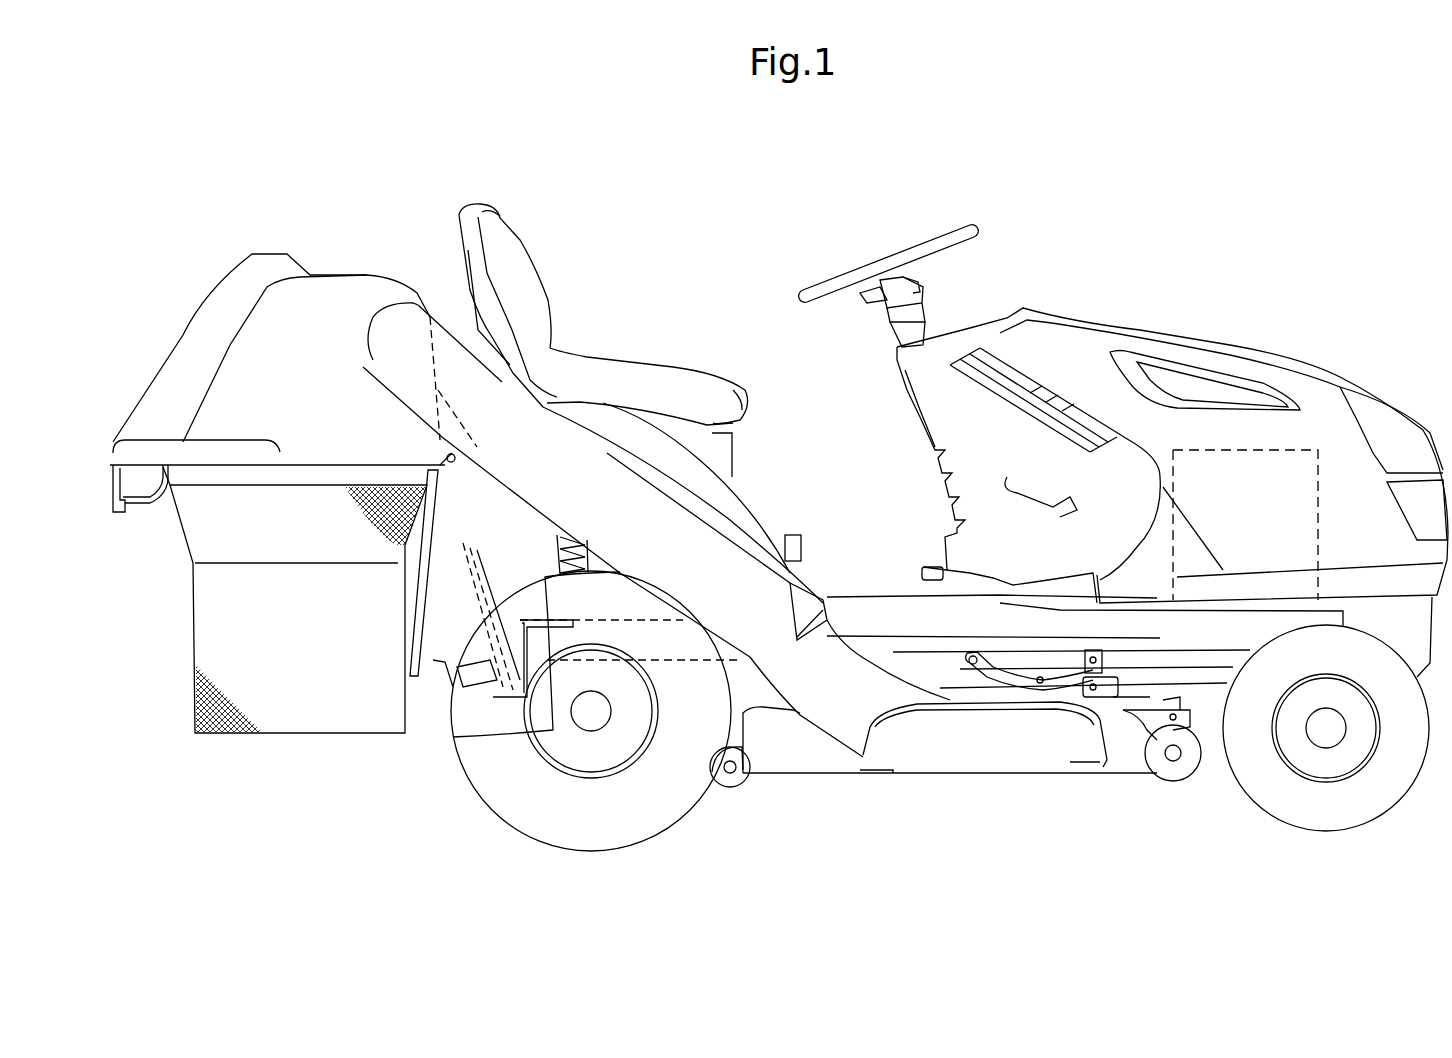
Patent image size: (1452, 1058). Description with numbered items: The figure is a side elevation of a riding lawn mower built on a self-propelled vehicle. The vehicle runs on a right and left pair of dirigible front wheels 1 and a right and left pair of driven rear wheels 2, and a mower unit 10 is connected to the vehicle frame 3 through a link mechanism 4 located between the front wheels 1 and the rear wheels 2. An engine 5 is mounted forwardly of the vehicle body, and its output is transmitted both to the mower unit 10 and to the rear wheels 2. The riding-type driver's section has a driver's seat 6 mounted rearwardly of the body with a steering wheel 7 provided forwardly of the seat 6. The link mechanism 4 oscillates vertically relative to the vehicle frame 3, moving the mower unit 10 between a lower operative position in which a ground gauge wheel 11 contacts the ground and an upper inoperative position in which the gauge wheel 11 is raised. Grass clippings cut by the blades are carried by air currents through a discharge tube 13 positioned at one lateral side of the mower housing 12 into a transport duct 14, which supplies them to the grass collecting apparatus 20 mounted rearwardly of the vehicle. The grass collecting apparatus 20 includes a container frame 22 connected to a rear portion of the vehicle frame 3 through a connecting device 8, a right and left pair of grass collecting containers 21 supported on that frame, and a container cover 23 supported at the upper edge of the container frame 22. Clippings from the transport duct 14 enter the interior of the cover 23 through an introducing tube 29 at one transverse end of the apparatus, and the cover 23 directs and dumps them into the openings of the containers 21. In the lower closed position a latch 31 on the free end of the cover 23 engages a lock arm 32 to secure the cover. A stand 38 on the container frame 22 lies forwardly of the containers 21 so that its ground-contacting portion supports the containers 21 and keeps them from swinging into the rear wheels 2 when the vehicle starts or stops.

The front wheel 1 is at (1324, 815).
The rear wheel 2 is at (596, 853).
The vehicle frame 3 is at (637, 612).
The link mechanism 4 is at (1063, 655).
The engine 5 is at (1318, 530).
The driver's seat 6 is at (538, 273).
The steering wheel 7 is at (885, 260).
The connecting device 8 is at (470, 603).
The mower unit 10 is at (972, 780).
The ground gauge wheel 11 is at (1173, 770).
The mower housing 12 is at (800, 762).
The discharge tube 13 is at (840, 657).
The transport duct 14 is at (720, 623).
The grass collecting apparatus 20 is at (178, 250).
The grass collecting container 21 is at (303, 720).
The container frame 22 is at (443, 547).
The container cover 23 is at (190, 347).
The introducing tube 29 is at (503, 383).
The latch 31 is at (115, 512).
The lock arm 32 is at (142, 500).
The stand 38 is at (417, 590).